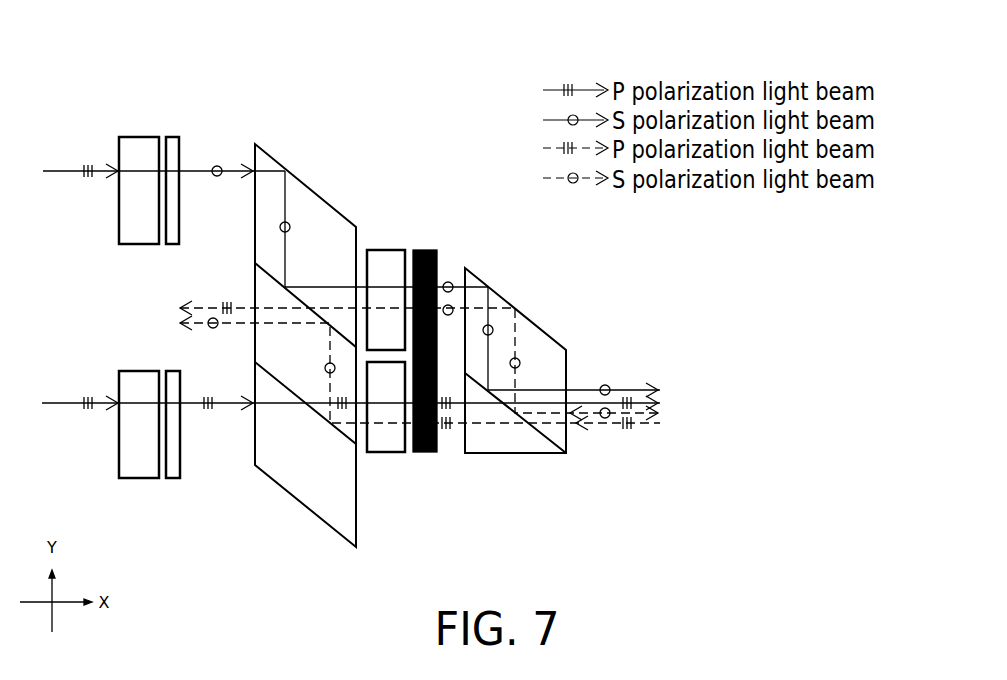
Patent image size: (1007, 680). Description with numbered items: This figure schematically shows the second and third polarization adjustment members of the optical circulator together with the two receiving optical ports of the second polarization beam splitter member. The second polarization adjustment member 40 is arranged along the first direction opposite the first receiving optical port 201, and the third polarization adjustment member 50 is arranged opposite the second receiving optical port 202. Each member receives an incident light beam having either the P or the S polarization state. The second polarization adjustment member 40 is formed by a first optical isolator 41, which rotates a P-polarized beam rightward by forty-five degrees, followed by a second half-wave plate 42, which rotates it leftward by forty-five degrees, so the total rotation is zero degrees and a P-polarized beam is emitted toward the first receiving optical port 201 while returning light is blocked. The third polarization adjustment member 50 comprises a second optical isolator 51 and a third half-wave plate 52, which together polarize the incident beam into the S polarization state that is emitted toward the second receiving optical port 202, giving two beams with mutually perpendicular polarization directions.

The second polarization adjustment member 40 is at (155, 477).
The first optical isolator 41 is at (135, 462).
The second half-wave plate 42 is at (173, 465).
The third polarization adjustment member 50 is at (153, 137).
The second optical isolator 51 is at (134, 145).
The third half-wave plate 52 is at (172, 140).
The first receiving optical port 201 is at (238, 414).
The second receiving optical port 202 is at (240, 238).